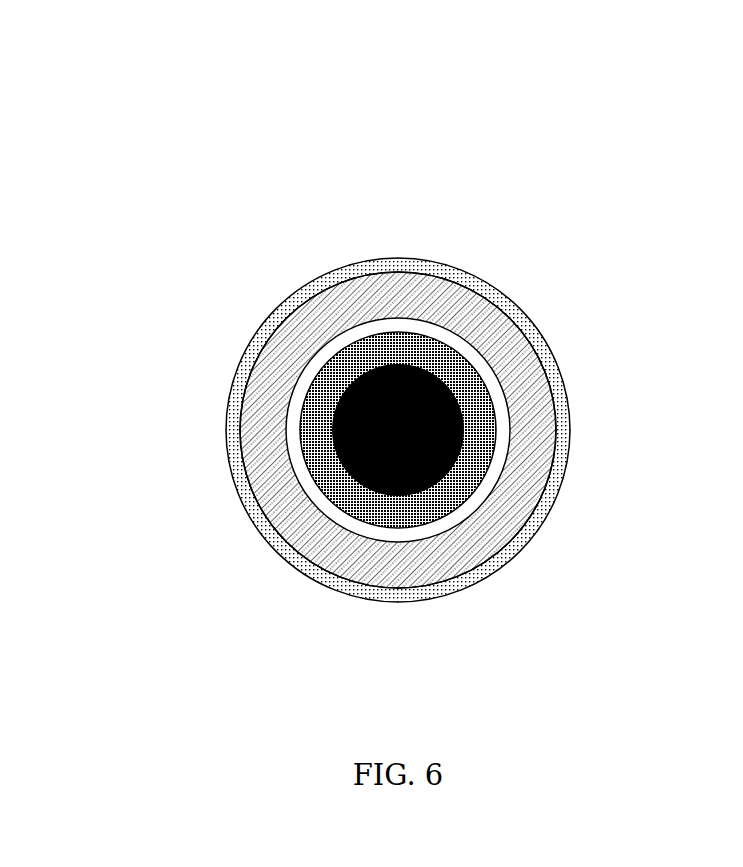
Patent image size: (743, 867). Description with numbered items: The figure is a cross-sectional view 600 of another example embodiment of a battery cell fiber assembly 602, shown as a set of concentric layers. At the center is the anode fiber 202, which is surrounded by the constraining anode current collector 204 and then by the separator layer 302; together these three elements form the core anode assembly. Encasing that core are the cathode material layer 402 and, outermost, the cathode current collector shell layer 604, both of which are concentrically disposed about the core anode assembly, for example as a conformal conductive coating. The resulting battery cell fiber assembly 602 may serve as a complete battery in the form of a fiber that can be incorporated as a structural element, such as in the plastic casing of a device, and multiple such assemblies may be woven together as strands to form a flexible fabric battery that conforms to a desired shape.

The cross-sectional view 600 is at (422, 357).
The battery cell fiber assembly 602 is at (324, 195).
The cathode current collector shell layer 604 is at (247, 348).
The cathode material layer 402 is at (262, 453).
The separator layer 302 is at (345, 520).
The constraining anode current collector 204 is at (483, 453).
The anode fiber 202 is at (460, 415).